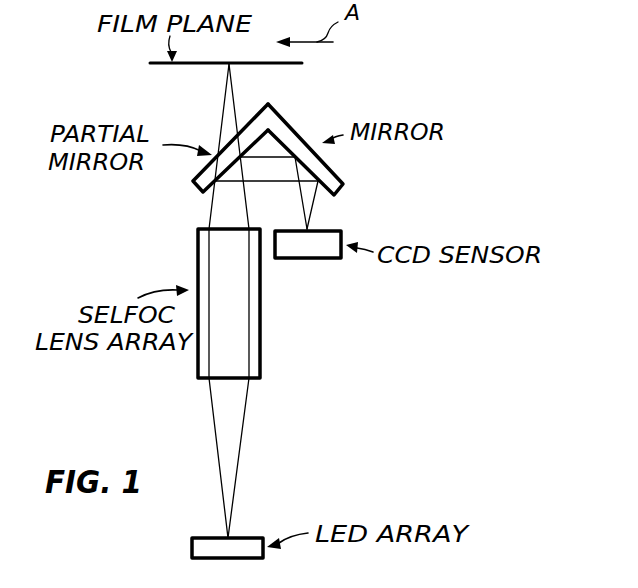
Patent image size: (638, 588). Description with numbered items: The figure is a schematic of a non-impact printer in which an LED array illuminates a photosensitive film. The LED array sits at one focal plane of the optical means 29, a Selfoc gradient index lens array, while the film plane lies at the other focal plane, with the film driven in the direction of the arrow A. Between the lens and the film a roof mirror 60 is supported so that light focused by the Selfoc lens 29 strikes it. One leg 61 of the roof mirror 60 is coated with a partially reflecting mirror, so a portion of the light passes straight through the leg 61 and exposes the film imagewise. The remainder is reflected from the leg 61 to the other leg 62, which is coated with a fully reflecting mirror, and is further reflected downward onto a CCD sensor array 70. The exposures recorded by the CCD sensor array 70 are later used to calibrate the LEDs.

The optical means 29 is at (198, 263).
The roof mirror 60 is at (255, 153).
The leg 61 is at (200, 194).
The leg 62 is at (340, 195).
The CCD sensor array 70 is at (326, 260).